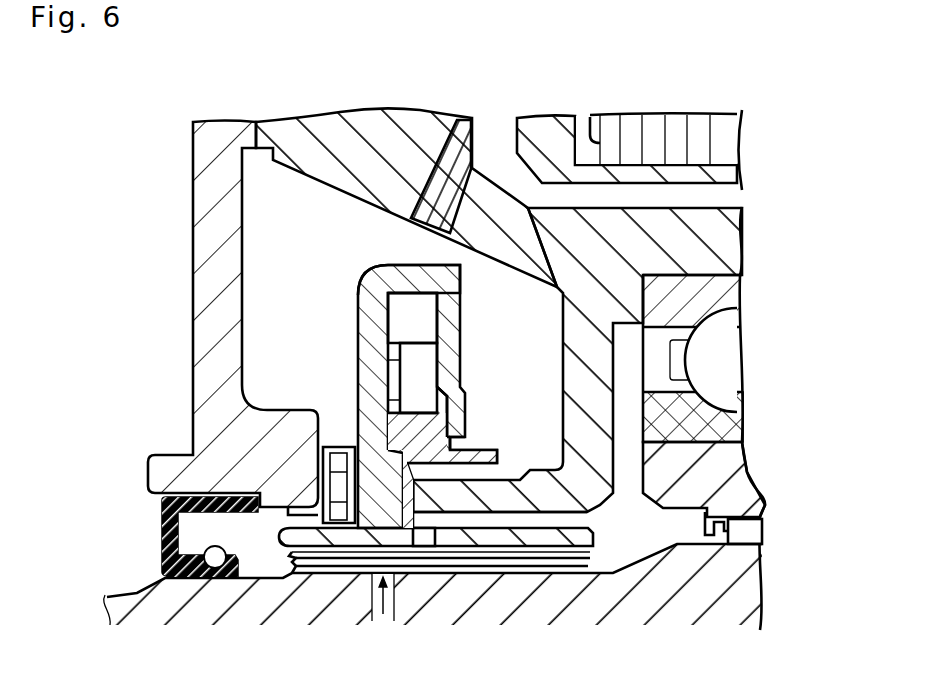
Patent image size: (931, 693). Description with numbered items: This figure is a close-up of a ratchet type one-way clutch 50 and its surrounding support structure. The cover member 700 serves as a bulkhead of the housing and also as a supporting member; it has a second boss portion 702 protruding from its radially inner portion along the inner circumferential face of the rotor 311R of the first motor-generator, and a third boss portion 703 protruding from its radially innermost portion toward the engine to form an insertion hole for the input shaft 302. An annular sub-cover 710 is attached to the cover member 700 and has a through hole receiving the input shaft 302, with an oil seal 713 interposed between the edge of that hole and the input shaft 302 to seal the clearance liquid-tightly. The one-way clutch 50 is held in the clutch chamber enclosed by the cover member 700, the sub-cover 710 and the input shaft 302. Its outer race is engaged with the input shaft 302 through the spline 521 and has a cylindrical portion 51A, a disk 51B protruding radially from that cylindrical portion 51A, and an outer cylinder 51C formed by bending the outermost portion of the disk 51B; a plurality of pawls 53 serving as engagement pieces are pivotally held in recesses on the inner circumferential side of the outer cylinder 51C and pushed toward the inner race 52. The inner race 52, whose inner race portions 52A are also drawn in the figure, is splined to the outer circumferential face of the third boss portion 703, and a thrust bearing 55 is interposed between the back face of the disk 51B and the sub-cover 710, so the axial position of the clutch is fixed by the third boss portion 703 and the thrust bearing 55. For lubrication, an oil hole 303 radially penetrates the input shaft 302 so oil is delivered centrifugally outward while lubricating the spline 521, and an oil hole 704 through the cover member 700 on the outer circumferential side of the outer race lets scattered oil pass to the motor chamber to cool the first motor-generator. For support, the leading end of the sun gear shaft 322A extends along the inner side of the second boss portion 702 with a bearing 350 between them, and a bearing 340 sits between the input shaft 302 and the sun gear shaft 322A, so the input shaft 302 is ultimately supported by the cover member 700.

The cover member 700 is at (347, 142).
The oil hole 704 is at (457, 160).
The rotor 311R is at (737, 130).
The sub-cover 710 is at (207, 197).
The second boss portion 702 is at (727, 238).
The third boss portion 703 is at (522, 500).
The outer cylinder 51C is at (420, 277).
The pawl 53 is at (402, 318).
The one-way clutch 50 is at (462, 306).
The disk 51B is at (373, 345).
The seal lip 52A is at (423, 365).
The inner race 52 is at (432, 433).
The bearing 350 is at (722, 293).
The thrust bearing 55 is at (313, 462).
The sun gear shaft 322A is at (730, 473).
The oil seal 713 is at (165, 537).
The bearing 340 is at (752, 532).
The input shaft 302 is at (740, 598).
The cylindrical portion 51A is at (279, 535).
The oil hole 303 is at (390, 598).
The spline 521 is at (460, 562).